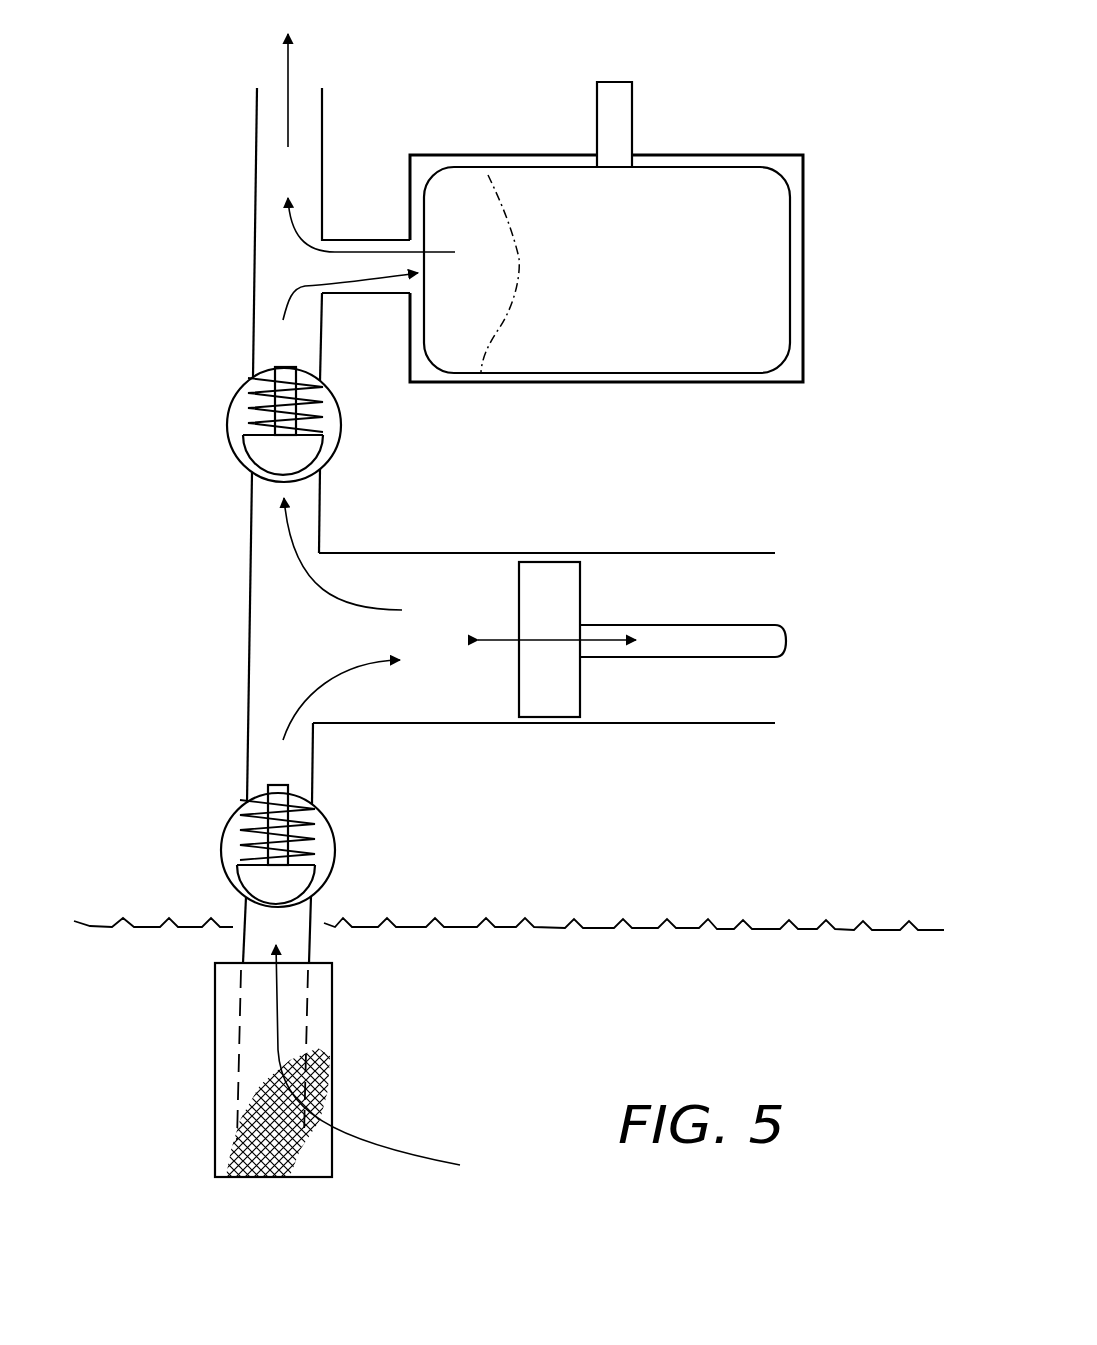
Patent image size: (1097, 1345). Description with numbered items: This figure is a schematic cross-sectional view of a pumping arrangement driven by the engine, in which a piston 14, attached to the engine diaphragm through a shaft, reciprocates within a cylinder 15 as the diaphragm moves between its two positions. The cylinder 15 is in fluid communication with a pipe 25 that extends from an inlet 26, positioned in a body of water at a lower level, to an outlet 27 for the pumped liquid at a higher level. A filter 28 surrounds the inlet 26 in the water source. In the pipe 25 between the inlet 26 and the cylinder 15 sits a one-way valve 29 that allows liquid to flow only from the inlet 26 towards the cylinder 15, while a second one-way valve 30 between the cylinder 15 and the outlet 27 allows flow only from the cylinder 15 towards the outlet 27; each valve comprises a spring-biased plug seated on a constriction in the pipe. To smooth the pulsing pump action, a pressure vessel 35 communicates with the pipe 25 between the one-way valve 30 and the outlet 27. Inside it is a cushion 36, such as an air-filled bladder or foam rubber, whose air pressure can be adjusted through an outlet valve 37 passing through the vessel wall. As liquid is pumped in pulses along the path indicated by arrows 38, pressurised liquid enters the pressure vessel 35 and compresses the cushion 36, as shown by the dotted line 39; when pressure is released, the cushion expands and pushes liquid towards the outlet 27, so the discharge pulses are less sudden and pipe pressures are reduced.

The piston 14 is at (563, 697).
The cylinder 15 is at (493, 553).
The pipe 25 is at (246, 622).
The inlet 26 is at (228, 1177).
The outlet 27 is at (300, 103).
The filter 28 is at (331, 1162).
The one-way valve 29 is at (221, 835).
The one-way valve 30 is at (230, 452).
The pressure vessel 35 is at (536, 387).
The cushion 36 is at (750, 264).
The outlet valve 37 is at (633, 110).
The arrows 38 is at (300, 287).
The dotted line 39 is at (497, 200).